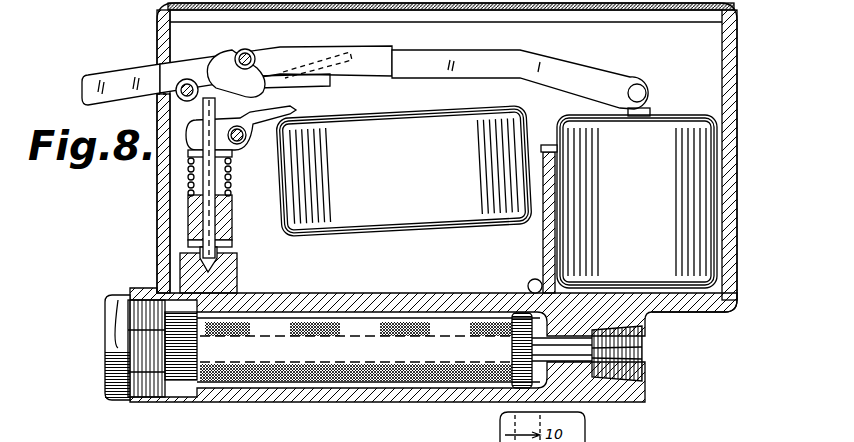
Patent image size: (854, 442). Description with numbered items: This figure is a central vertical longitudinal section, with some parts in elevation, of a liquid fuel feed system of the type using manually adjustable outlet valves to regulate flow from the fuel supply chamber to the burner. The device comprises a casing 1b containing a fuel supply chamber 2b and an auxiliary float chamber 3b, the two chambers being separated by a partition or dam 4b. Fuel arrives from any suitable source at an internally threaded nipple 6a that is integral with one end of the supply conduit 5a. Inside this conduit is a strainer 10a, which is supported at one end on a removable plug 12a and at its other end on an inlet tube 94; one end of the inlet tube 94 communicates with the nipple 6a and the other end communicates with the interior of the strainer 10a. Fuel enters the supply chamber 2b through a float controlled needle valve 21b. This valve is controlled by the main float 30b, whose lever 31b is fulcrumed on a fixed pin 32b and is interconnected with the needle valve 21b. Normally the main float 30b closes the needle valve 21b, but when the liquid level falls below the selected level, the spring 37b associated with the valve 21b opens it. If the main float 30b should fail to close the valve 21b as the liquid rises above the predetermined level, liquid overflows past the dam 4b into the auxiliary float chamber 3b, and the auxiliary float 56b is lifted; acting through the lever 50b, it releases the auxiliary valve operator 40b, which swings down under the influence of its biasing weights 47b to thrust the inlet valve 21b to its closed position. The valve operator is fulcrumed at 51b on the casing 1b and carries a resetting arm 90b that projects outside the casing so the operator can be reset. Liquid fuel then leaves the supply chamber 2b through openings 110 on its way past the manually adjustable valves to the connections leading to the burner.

The casing 1b is at (157, 240).
The fuel supply chamber 2b is at (451, 142).
The auxiliary float chamber 3b is at (737, 296).
The partition or dam 4b is at (543, 248).
The supply conduit 5a is at (368, 402).
The internally threaded nipple 6a is at (618, 400).
The strainer 10a is at (283, 350).
The removable plug 12a is at (105, 378).
The needle valve 21b is at (232, 228).
The main float 30b is at (404, 171).
The lever 31b is at (265, 113).
The pin 32b is at (243, 145).
The spring 37b is at (186, 177).
The auxiliary valve operator 40b is at (208, 75).
The weights 47b is at (392, 48).
The lever 50b is at (540, 60).
The fulcrum 51b is at (176, 81).
The auxiliary float 56b is at (637, 201).
The resetting arm 90b is at (89, 75).
The inlet tube 94 is at (562, 349).
The openings 110 is at (528, 285).